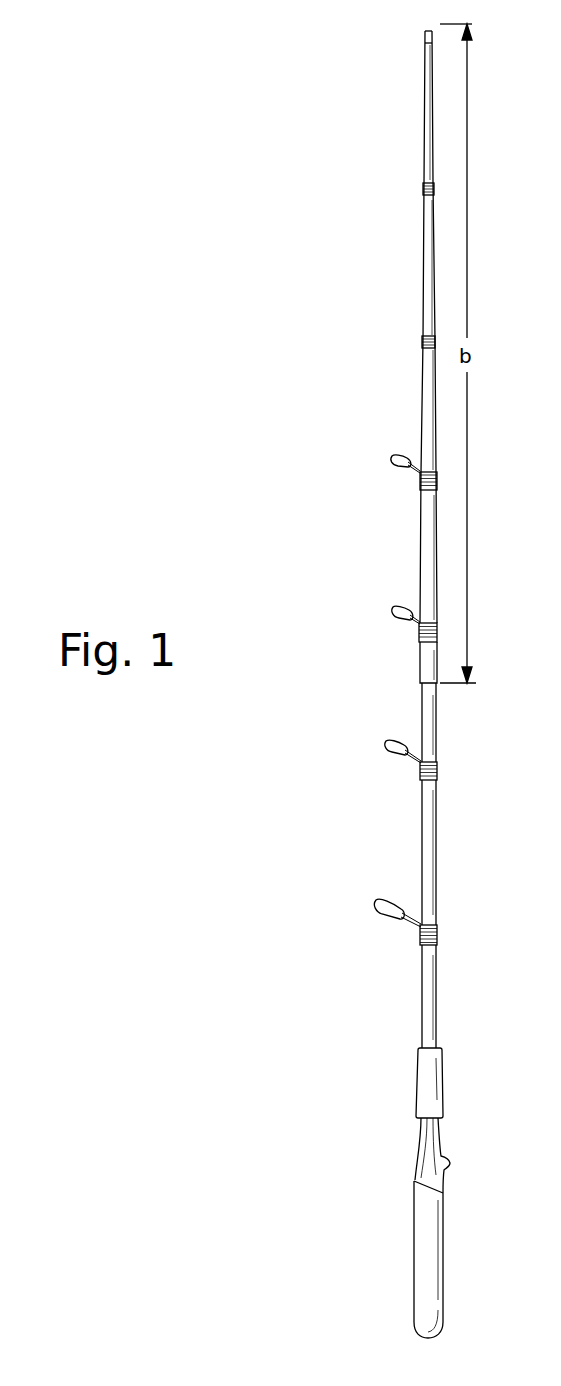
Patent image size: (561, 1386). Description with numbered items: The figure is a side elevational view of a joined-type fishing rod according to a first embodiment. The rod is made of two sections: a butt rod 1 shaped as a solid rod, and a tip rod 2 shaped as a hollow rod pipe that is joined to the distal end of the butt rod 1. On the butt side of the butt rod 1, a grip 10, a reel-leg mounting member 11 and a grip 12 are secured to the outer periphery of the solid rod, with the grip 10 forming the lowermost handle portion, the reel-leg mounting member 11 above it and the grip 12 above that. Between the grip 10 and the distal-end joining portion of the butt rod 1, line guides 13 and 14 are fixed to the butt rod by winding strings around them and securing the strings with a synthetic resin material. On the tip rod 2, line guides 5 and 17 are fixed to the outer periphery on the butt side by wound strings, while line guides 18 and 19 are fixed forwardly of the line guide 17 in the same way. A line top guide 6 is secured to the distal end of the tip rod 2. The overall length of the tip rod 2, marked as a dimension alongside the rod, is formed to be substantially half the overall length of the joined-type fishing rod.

The butt rod 1 is at (425, 990).
The tip rod 2 is at (425, 253).
The line guide 5 is at (393, 609).
The line top guide 6 is at (425, 30).
The grip 10 is at (420, 1278).
The reel-leg mounting member 11 is at (420, 1172).
The grip 12 is at (422, 1080).
The line guide 13 is at (377, 903).
The line guide 14 is at (386, 744).
The line guide 17 is at (392, 460).
The line guide 18 is at (423, 337).
The line guide 19 is at (424, 183).